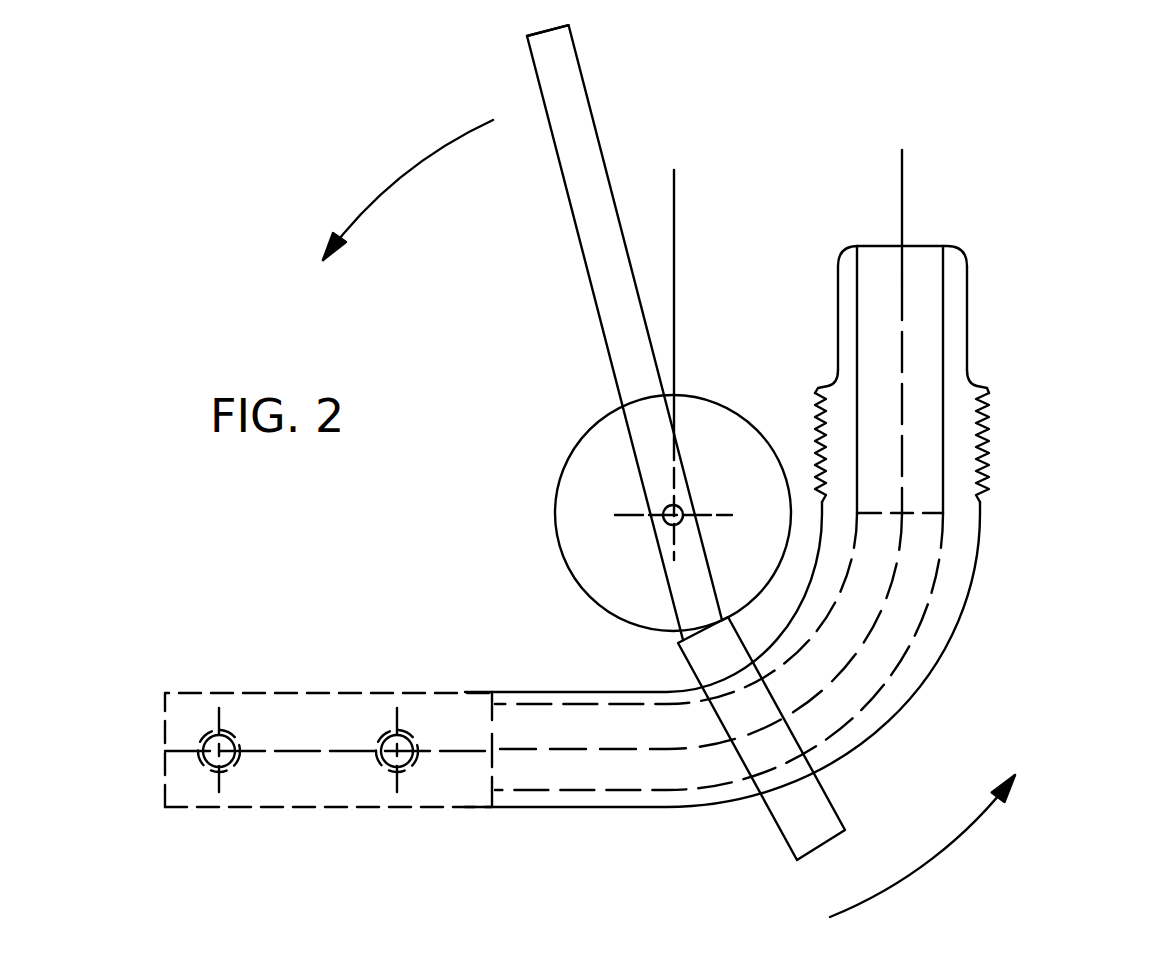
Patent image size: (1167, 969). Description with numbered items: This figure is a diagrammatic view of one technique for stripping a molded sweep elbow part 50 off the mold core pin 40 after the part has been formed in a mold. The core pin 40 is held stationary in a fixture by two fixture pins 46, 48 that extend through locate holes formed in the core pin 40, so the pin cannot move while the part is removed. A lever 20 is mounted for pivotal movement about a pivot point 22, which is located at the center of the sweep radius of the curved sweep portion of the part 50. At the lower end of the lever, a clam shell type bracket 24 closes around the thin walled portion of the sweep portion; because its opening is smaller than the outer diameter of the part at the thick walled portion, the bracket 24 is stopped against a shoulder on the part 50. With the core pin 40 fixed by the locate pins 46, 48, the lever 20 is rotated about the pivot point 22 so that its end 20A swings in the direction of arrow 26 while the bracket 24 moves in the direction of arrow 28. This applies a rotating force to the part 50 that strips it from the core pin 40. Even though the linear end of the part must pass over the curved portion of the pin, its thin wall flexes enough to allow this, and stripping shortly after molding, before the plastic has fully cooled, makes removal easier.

The lever 20 is at (603, 256).
The end of lever 20A is at (575, 42).
The pivot point 22 is at (664, 511).
The clam shell type bracket 24 is at (793, 823).
The arrow 26 is at (368, 208).
The arrow 28 is at (953, 843).
The core pin 40 is at (343, 692).
The fixture pin 46 is at (218, 743).
The fixture pin 48 is at (407, 733).
The part 50 is at (995, 616).